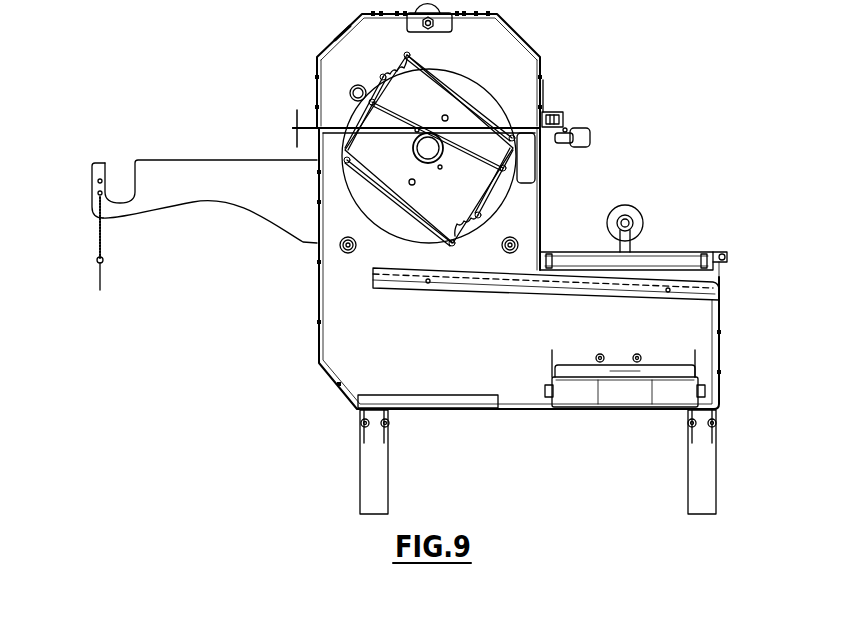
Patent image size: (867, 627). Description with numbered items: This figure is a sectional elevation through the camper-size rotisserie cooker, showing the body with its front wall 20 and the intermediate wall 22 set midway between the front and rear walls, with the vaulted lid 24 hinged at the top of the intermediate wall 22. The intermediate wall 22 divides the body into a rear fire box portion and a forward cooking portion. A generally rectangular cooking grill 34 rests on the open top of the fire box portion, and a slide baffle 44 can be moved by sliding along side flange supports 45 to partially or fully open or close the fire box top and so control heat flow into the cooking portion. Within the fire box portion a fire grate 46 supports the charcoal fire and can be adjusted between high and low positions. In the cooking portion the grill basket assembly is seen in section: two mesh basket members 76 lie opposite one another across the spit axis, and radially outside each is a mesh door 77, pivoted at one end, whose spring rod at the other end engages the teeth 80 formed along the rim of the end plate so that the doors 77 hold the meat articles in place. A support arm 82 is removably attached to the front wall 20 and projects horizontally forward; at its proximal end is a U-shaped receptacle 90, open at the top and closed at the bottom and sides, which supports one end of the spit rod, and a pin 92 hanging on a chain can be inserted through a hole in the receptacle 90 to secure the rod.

The front wall 20 is at (318, 263).
The intermediate wall 22 is at (540, 210).
The vaulted lid 24 is at (521, 33).
The cooking grill 34 is at (663, 252).
The slide baffle 44 is at (719, 283).
The side flange supports 45 is at (588, 290).
The fire grate 46 is at (667, 375).
The mesh basket member 76 is at (400, 108).
The mesh door 77 is at (433, 73).
The teeth 80 is at (391, 73).
The support arm 82 is at (200, 160).
The U-shaped receptacle 90 is at (121, 183).
The pin 92 is at (104, 267).